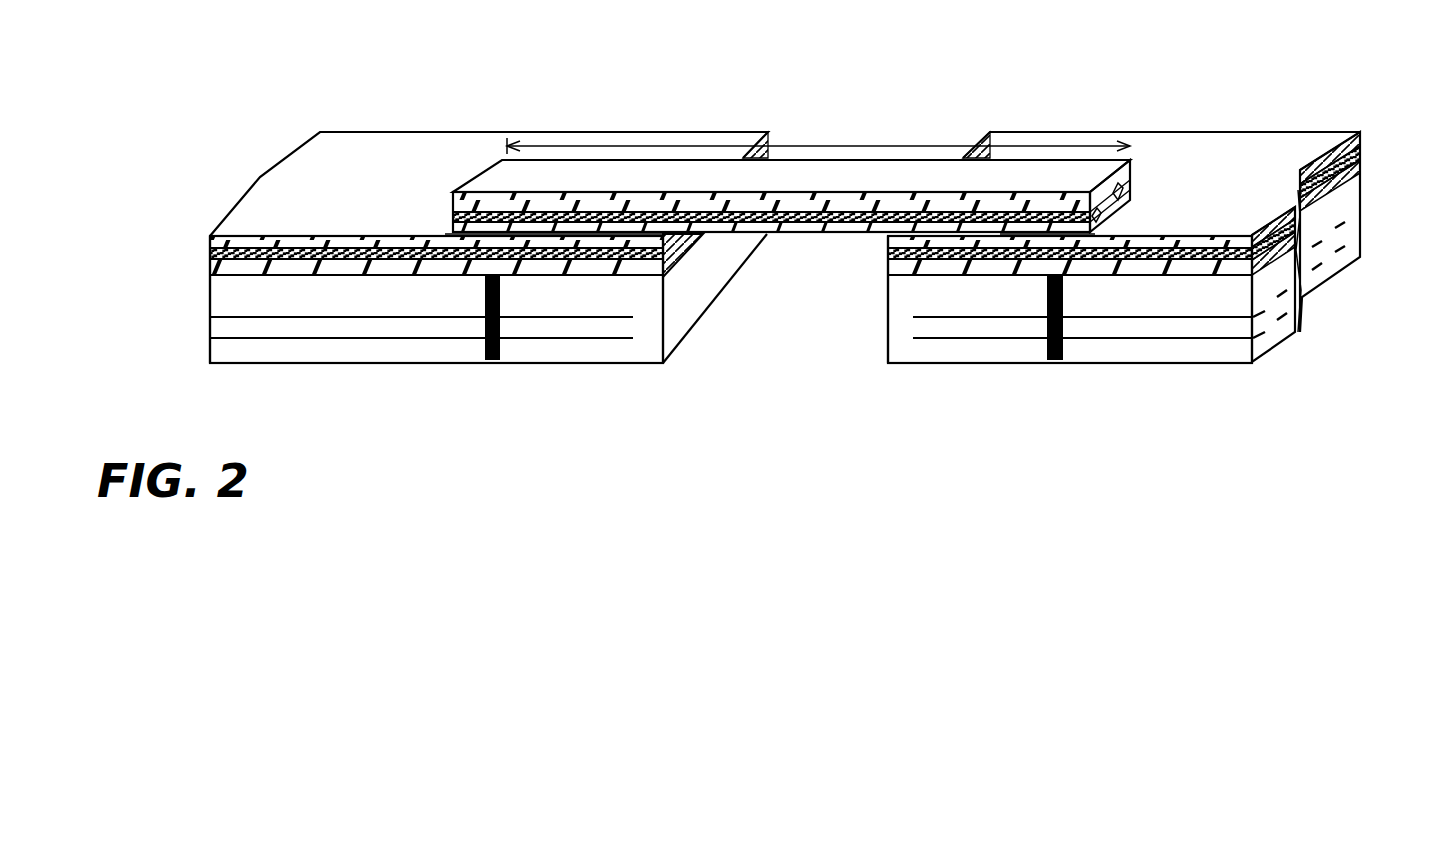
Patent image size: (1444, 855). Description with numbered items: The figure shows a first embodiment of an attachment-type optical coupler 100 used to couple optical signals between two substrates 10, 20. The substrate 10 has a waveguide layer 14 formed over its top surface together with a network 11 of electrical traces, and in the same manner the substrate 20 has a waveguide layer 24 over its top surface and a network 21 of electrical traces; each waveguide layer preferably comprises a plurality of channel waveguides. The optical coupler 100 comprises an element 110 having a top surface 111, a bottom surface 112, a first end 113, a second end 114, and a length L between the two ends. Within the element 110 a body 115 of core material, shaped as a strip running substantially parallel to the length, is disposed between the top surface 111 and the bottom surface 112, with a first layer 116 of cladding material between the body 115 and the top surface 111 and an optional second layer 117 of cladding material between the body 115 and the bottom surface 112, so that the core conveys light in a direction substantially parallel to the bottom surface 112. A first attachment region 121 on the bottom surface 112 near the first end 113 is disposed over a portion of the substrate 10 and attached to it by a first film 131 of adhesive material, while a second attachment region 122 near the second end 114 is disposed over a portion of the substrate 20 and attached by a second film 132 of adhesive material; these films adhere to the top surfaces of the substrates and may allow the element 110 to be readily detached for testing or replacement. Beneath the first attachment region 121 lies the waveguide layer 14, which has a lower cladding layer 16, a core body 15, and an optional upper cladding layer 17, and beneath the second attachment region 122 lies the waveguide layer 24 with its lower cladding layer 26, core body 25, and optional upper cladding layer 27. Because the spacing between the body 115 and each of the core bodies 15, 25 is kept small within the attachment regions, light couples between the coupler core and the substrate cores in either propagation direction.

The optical coupler 100 is at (460, 97).
The element 110 is at (789, 137).
The top surface 111 is at (882, 173).
The bottom surface 112 is at (842, 235).
The first end 113 is at (478, 188).
The second end 114 is at (1118, 180).
The body of core material 115 is at (1133, 203).
The first layer of cladding material 116 is at (1123, 207).
The second layer of cladding material 117 is at (870, 236).
The first attachment region 121 is at (582, 236).
The second attachment region 122 is at (982, 236).
The first film of adhesive material 131 is at (445, 237).
The second film of adhesive material 132 is at (1097, 222).
The substrate 10 is at (508, 358).
The network of electrical traces 11 is at (333, 340).
The waveguide layer 14 is at (210, 276).
The core body 15 is at (210, 256).
The lower cladding layer 16 is at (210, 268).
The upper cladding layer 17 is at (210, 242).
The substrate 20 is at (1047, 361).
The network of electrical traces 21 is at (1187, 337).
The waveguide layer 24 is at (1360, 172).
The core body 25 is at (1360, 147).
The lower cladding layer 26 is at (1360, 163).
The upper cladding layer 27 is at (1360, 132).